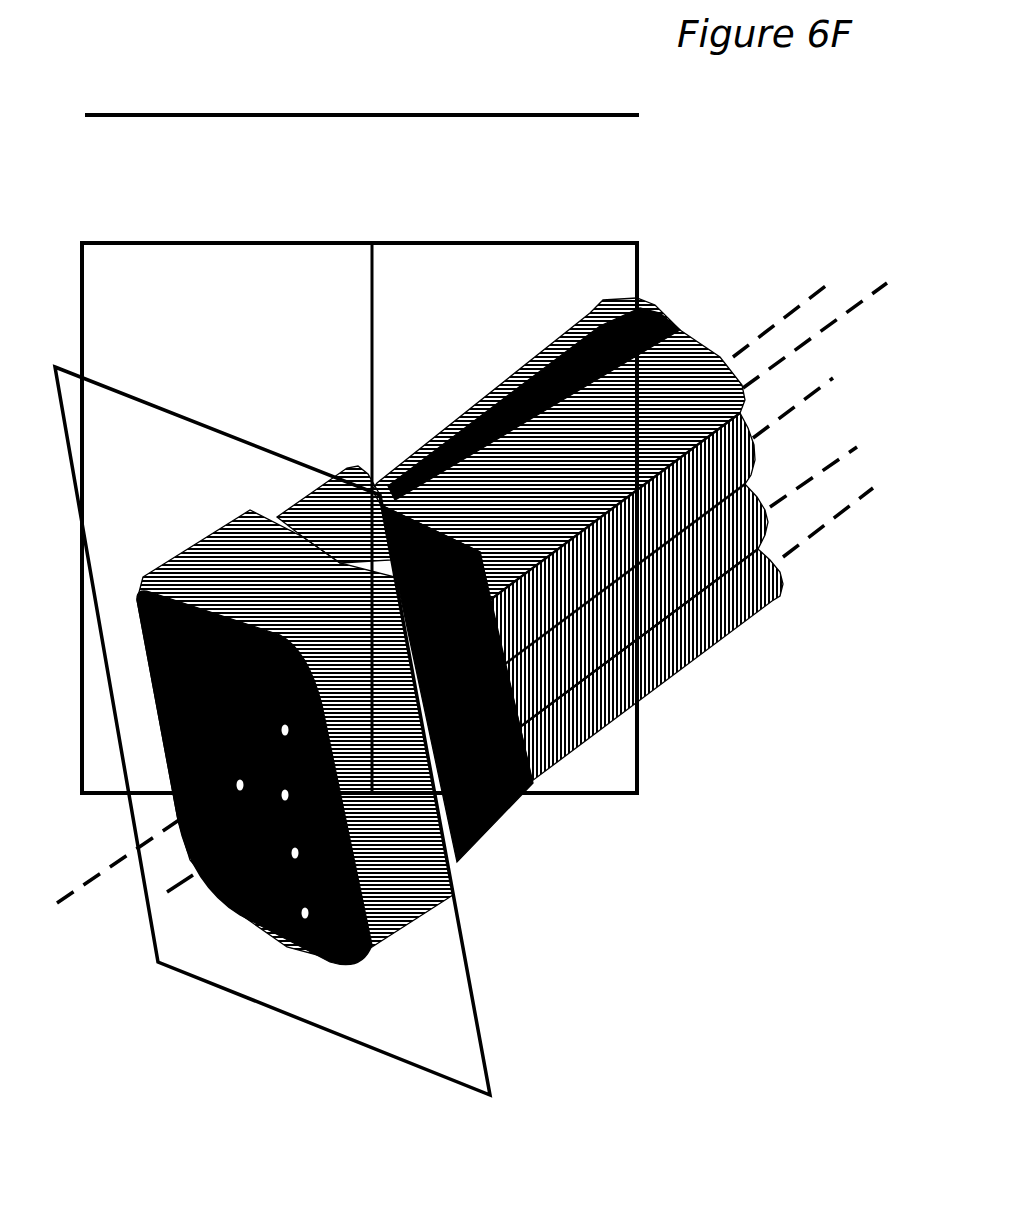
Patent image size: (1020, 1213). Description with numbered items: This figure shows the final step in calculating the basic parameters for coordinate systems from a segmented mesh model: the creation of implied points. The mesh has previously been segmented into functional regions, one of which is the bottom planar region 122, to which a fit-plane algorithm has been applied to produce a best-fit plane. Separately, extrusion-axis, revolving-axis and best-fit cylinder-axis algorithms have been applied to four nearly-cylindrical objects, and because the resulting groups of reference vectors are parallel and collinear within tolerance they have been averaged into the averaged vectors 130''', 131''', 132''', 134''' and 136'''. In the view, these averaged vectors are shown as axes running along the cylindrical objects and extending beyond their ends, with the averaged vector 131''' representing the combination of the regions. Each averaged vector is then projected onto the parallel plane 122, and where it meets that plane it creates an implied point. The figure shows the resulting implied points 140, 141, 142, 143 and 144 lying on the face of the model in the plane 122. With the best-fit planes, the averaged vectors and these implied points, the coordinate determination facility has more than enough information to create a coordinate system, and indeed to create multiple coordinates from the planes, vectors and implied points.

The bottom planar region 122 is at (240, 900).
The averaged vector 130''' is at (599, 435).
The averaged vector 131''' is at (815, 302).
The averaged vector 132''' is at (675, 521).
The averaged vector 134''' is at (685, 587).
The averaged vector 136''' is at (704, 634).
The implied point 140 is at (310, 915).
The implied point 141 is at (300, 855).
The implied point 142 is at (290, 795).
The implied point 143 is at (282, 730).
The implied point 144 is at (236, 786).